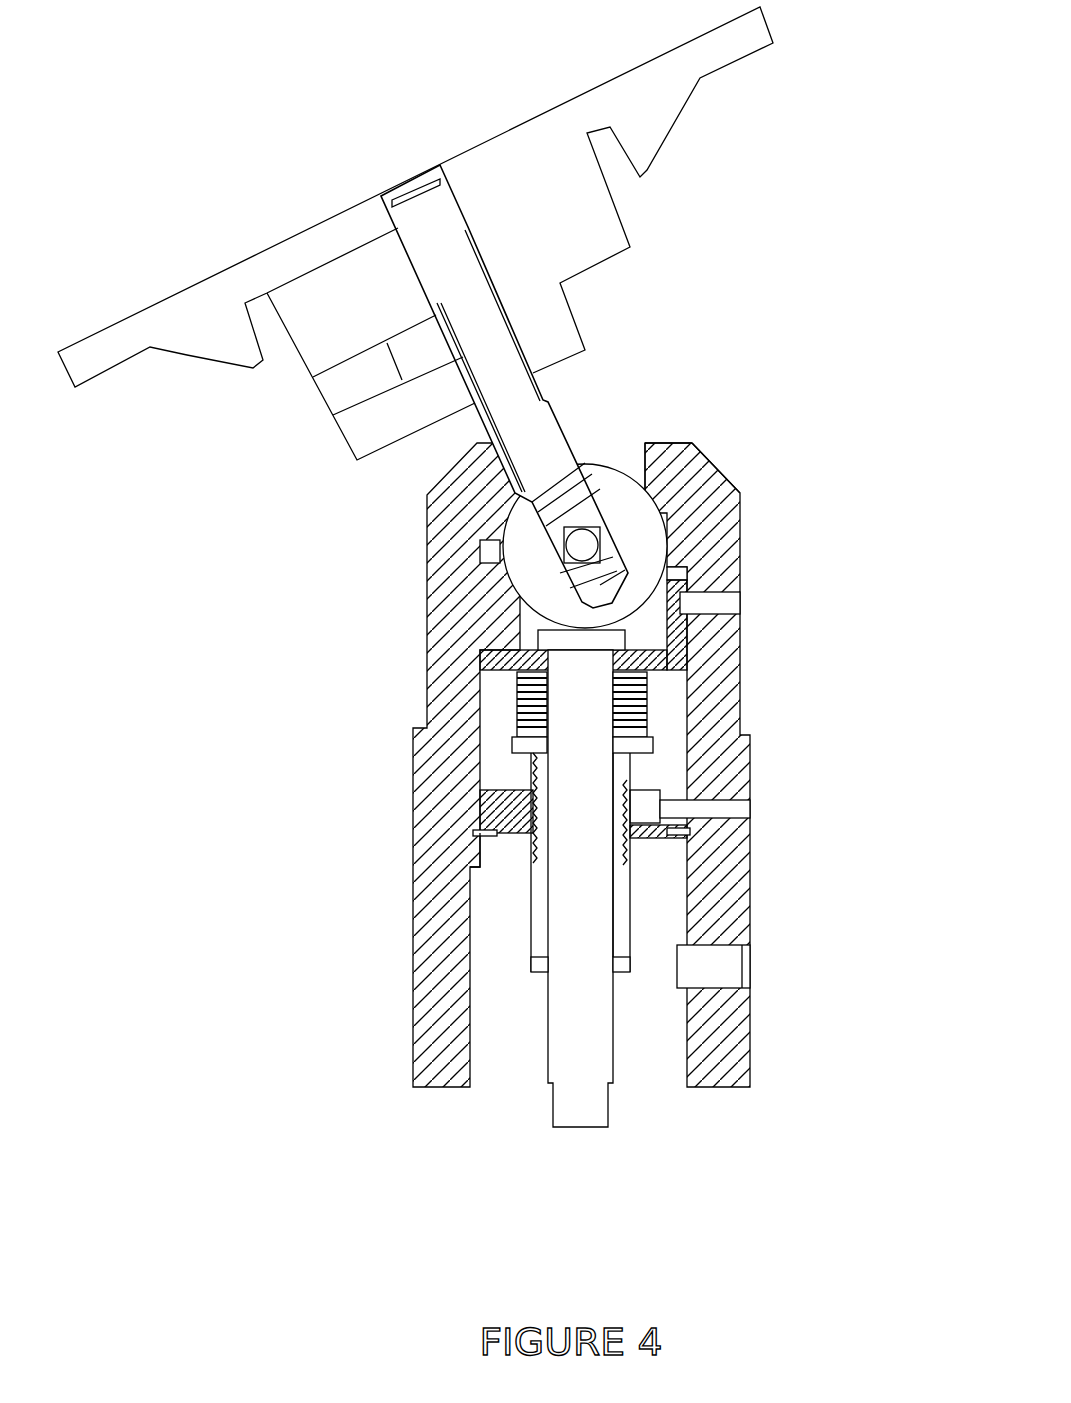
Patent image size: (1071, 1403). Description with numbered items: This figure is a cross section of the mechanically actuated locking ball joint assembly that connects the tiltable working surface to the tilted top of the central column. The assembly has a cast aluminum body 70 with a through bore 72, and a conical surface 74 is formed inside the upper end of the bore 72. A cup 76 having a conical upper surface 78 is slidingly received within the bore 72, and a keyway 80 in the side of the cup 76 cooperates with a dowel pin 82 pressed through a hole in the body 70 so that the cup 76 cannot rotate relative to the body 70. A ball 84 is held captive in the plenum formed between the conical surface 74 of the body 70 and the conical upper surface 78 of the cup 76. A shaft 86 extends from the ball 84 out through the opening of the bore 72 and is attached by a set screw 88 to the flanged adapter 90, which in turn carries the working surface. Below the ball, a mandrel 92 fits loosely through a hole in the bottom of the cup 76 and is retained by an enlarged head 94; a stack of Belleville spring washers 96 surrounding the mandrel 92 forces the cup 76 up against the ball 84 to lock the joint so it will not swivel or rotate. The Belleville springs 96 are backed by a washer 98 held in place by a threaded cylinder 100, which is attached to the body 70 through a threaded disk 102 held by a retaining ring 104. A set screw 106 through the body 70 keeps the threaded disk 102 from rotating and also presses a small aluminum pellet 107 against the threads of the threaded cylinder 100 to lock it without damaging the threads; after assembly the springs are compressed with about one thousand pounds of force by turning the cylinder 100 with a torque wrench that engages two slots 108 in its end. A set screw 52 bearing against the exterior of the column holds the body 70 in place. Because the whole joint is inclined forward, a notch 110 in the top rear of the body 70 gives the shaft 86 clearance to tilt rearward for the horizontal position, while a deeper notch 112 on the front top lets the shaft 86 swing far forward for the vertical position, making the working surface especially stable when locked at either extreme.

The set screw 52 is at (752, 966).
The body 70 is at (743, 730).
The through bore 72 is at (610, 410).
The conical surface 74 is at (690, 522).
The cup 76 is at (670, 652).
The conical upper surface 78 is at (690, 575).
The keyway 80 is at (680, 662).
The dowel pin 82 is at (740, 603).
The ball 84 is at (602, 463).
The shaft 86 is at (457, 258).
The set screw 88 is at (330, 400).
The flanged adapter 90 is at (308, 230).
The mandrel 92 is at (617, 1070).
The enlarged head 94 is at (537, 640).
The Belleville spring washers 96 is at (516, 716).
The washer 98 is at (512, 745).
The threaded cylinder 100 is at (530, 920).
The threaded disk 102 is at (473, 828).
The retaining ring 104 is at (480, 870).
The set screw 106 is at (748, 810).
The aluminum pellet 107 is at (640, 832).
The slots 108 is at (533, 977).
The notch 110 is at (460, 508).
The deeper notch 112 is at (700, 467).